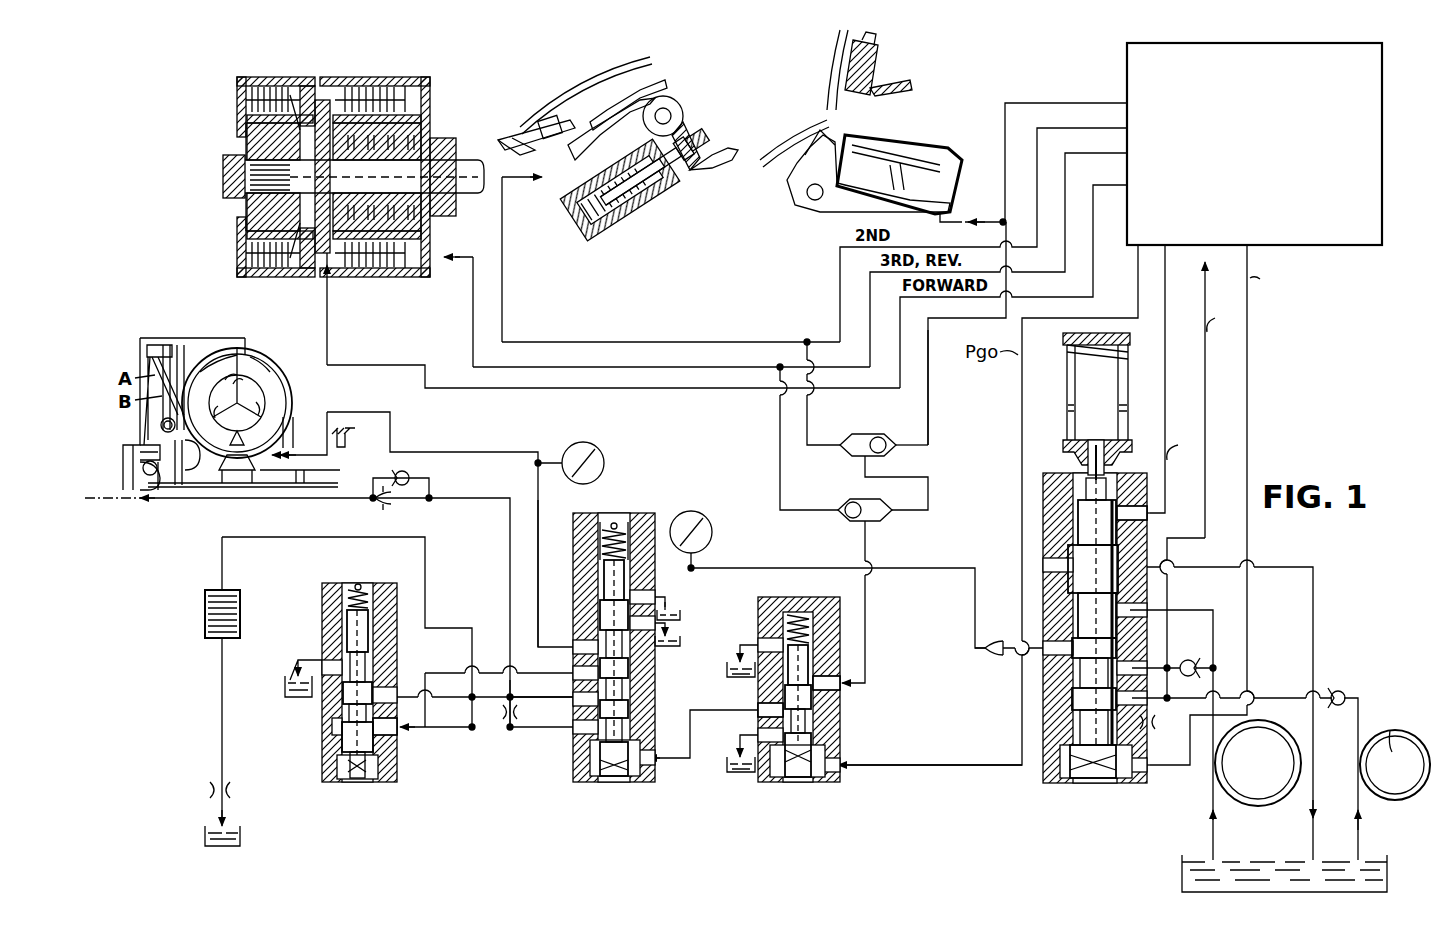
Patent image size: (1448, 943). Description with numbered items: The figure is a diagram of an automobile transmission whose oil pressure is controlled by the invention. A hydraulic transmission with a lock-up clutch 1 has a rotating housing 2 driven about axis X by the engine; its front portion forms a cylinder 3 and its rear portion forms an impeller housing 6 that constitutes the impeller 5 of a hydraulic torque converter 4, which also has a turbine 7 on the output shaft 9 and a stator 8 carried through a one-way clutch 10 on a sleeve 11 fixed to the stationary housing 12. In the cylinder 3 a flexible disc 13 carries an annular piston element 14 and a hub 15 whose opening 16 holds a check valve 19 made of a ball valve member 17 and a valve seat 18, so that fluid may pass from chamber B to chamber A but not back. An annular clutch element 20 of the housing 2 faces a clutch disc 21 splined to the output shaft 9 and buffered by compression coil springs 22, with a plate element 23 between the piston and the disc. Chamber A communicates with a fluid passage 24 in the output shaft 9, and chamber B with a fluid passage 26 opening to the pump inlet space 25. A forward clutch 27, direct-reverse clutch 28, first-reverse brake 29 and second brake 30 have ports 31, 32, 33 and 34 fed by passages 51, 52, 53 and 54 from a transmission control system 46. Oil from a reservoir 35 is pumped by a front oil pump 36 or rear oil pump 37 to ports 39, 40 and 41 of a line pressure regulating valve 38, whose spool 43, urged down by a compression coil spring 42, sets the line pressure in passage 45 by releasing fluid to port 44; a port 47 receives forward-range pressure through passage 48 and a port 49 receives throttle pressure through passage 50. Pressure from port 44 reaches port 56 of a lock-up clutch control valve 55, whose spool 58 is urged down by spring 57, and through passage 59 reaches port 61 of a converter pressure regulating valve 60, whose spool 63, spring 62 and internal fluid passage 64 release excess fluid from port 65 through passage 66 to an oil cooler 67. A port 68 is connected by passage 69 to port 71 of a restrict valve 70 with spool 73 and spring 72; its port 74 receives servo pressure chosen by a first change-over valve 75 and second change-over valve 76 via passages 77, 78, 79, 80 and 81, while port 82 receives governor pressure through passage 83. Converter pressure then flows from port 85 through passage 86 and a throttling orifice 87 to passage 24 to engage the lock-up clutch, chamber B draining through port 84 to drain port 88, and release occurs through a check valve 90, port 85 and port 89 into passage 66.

The hydraulic transmission with a lock-up clutch 1 is at (228, 306).
The housing 2 is at (152, 338).
The cylinder 3 is at (147, 340).
The hydraulic torque converter 4 is at (250, 372).
The impeller 5 is at (290, 380).
The impeller housing 6 is at (288, 400).
The turbine 7 is at (230, 338).
The stator 8 is at (240, 428).
The output shaft 9 is at (196, 504).
The one-way clutch 10 is at (250, 487).
The sleeve 11 is at (300, 487).
The stationary housing 12 is at (358, 444).
The flexible disc 13 is at (148, 410).
The annular piston element 14 is at (150, 358).
The hub 15 is at (140, 455).
The opening 16 is at (177, 488).
The ball valve member 17 is at (142, 488).
The valve seat 18 is at (150, 492).
The check valve 19 is at (140, 481).
The annular clutch element 20 is at (186, 345).
The clutch disc 21 is at (185, 455).
The compression coil springs 22 is at (162, 428).
The plate element 23 is at (170, 345).
The fluid passage 24 is at (218, 490).
The pump inlet space 25 is at (285, 432).
The fluid passage 26 is at (390, 412).
The forward clutch 27 is at (235, 100).
The direct-reverse clutch 28 is at (440, 105).
The first-reverse brake 29 is at (912, 125).
The second brake 30 is at (690, 112).
The port 31 is at (332, 284).
The port 32 is at (445, 256).
The port 33 is at (967, 311).
The port 34 is at (560, 180).
The reservoir 35 is at (1182, 878).
The front oil pump 36 is at (1262, 800).
The rear oil pump 37 is at (1392, 798).
The line pressure regulating valve 38 is at (1048, 765).
The port 39 is at (1128, 648).
The port 40 is at (1125, 600).
The port 41 is at (1215, 767).
The compression coil spring 42 is at (1065, 352).
The spool 43 is at (1070, 563).
The port 44 is at (1040, 658).
The fluid passage 45 is at (1207, 495).
The transmission control system 46 is at (1368, 247).
The port 47 is at (1122, 752).
The passage 48 is at (1250, 405).
The port 49 is at (1150, 510).
The passage 50 is at (1165, 395).
The passage 51 is at (688, 390).
The passage 52 is at (655, 365).
The passage 53 is at (1008, 103).
The passage 54 is at (745, 340).
The lock-up clutch control valve 55 is at (572, 742).
The port 56 is at (632, 684).
The compression coil spring 57 is at (602, 542).
The spool 58 is at (598, 622).
The passage 59 is at (518, 666).
The converter pressure regulating valve 60 is at (398, 750).
The port 61 is at (388, 727).
The compression coil spring 62 is at (348, 600).
The spool 63 is at (340, 692).
The fluid passage 64 is at (342, 748).
The port 65 is at (388, 690).
The passage 66 is at (428, 583).
The oil cooler 67 is at (204, 608).
The port 68 is at (636, 748).
The passage 69 is at (712, 710).
The restrict valve 70 is at (757, 772).
The port 71 is at (766, 697).
The compression coil spring 72 is at (785, 610).
The spool 73 is at (815, 670).
The port 74 is at (830, 690).
The first change-over valve 75 is at (880, 438).
The second change-over valve 76 is at (840, 500).
The passage 77 is at (930, 392).
The passage 78 is at (930, 478).
The passage 79 is at (868, 548).
The passage 80 is at (808, 405).
The passage 81 is at (778, 455).
The port 82 is at (820, 755).
The passage 83 is at (941, 747).
The port 84 is at (575, 656).
The port 85 is at (575, 696).
The passage 86 is at (535, 548).
The throttling orifice 87 is at (388, 508).
The drain port 88 is at (645, 640).
The port 89 is at (575, 725).
The check valve 90 is at (412, 475).